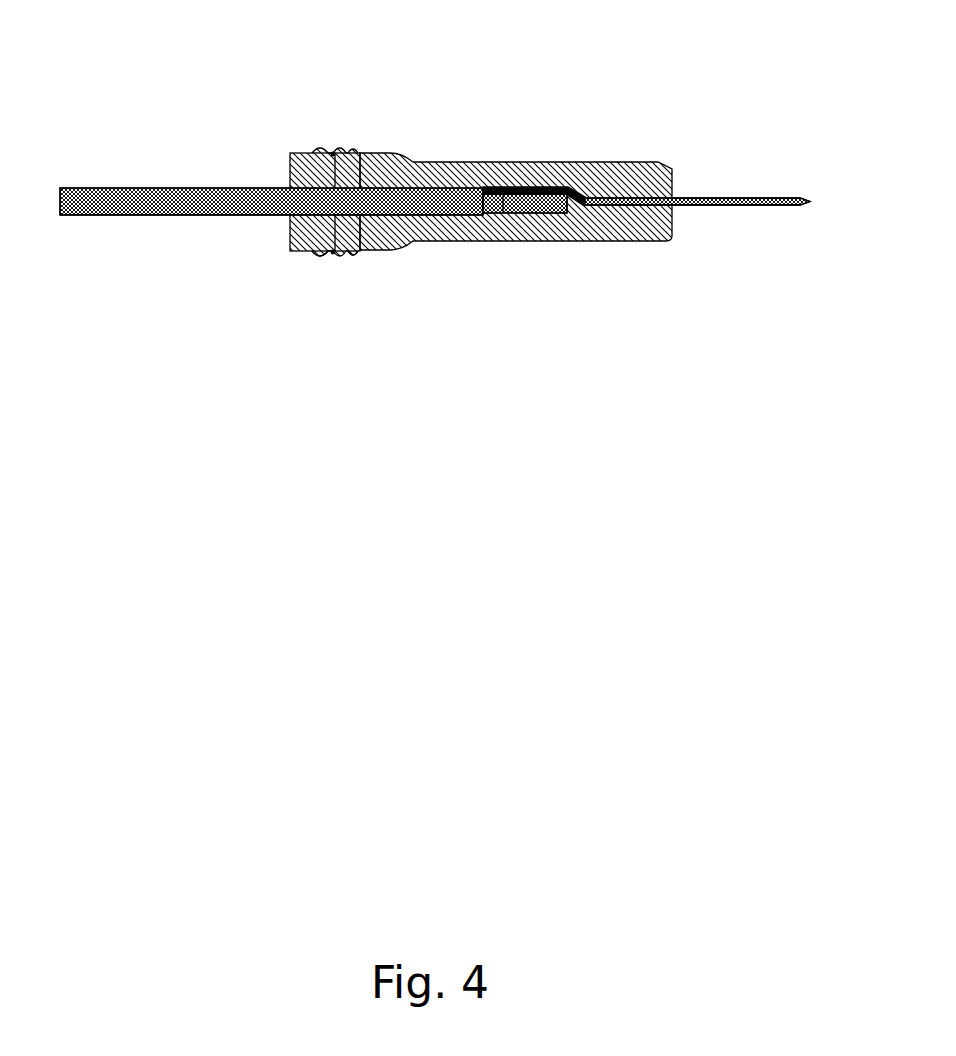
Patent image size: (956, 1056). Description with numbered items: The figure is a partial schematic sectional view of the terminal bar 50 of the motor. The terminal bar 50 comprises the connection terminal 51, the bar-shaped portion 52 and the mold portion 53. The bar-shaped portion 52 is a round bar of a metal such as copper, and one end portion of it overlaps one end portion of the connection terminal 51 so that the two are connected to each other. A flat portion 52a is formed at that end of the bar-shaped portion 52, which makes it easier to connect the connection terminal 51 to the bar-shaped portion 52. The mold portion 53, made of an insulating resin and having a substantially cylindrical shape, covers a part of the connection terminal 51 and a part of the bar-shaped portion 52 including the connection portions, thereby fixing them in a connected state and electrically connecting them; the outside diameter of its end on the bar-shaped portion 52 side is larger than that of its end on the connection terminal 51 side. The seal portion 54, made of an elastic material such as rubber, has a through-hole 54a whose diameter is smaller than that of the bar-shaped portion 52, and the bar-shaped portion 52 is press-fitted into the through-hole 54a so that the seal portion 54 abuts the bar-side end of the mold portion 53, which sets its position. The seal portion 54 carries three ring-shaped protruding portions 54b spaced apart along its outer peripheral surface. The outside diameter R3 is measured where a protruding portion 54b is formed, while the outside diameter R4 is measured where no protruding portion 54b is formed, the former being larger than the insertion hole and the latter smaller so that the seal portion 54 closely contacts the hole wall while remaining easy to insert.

The terminal bar 50 is at (435, 172).
The connection terminal 51 is at (713, 198).
The bar-shaped portion 52 is at (327, 209).
The flat portion 52a is at (512, 215).
The mold portion 53 is at (460, 162).
The seal portion 54 is at (307, 198).
The through-hole 54a is at (290, 190).
The protruding portion 54b is at (318, 150).
The outside diameter of seal portion at protruding portion R3 is at (350, 257).
The outside diameter of seal portion without protruding portion R4 is at (318, 255).